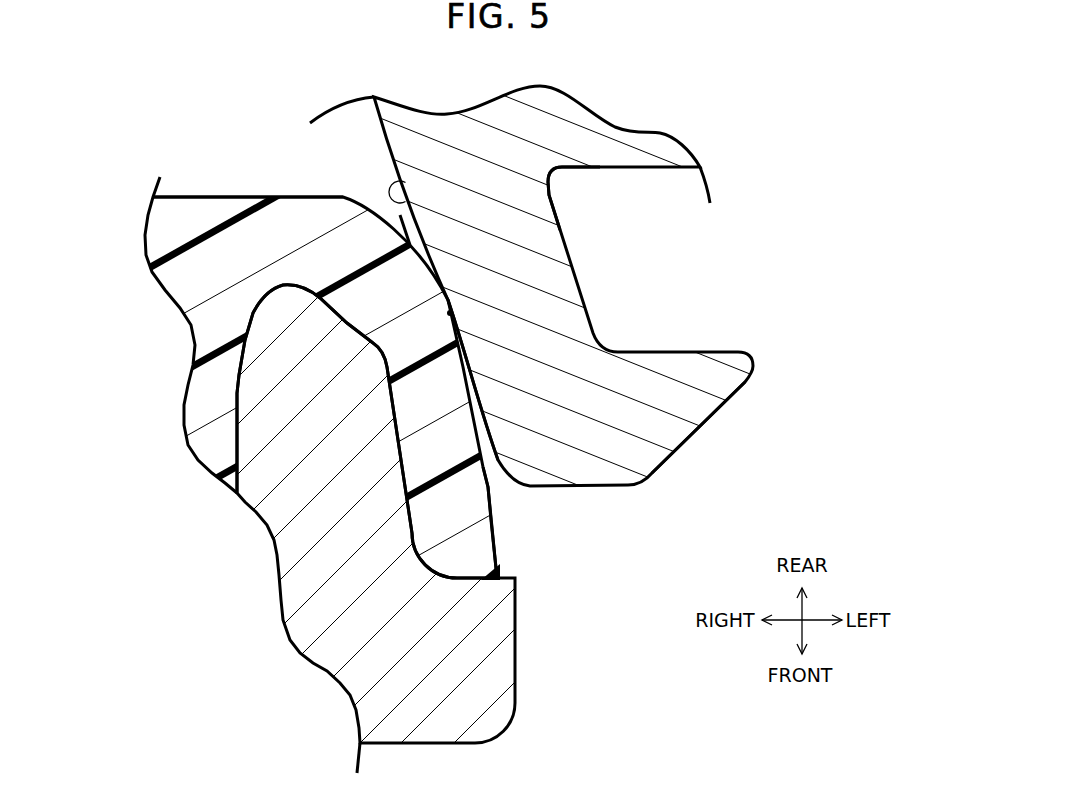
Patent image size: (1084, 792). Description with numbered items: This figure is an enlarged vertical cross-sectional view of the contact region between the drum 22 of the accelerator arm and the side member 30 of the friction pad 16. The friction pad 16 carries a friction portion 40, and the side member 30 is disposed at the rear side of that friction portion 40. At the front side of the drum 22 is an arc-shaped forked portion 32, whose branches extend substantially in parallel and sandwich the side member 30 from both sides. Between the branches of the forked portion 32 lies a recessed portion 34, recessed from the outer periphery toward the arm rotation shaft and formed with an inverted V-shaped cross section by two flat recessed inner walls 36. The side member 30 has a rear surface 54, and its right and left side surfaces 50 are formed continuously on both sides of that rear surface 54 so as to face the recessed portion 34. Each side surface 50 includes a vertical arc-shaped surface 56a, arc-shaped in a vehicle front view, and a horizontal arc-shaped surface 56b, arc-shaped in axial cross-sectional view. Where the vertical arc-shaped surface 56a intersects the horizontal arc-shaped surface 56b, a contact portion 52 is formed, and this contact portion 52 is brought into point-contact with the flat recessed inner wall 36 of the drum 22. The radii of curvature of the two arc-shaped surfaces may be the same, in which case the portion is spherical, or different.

The friction pad 16 is at (567, 668).
The drum 22 is at (728, 333).
The side member 30 is at (197, 185).
The forked portion 32 is at (663, 468).
The recessed portion 34 is at (343, 170).
The recessed inner wall 36 is at (405, 235).
The friction portion 40 is at (283, 163).
The side surface 50 is at (491, 486).
The contact portion 52 is at (452, 310).
The rear surface 54 is at (220, 195).
The vertical arc-shaped surface 56a is at (428, 262).
The horizontal arc-shaped surface 56b is at (493, 527).